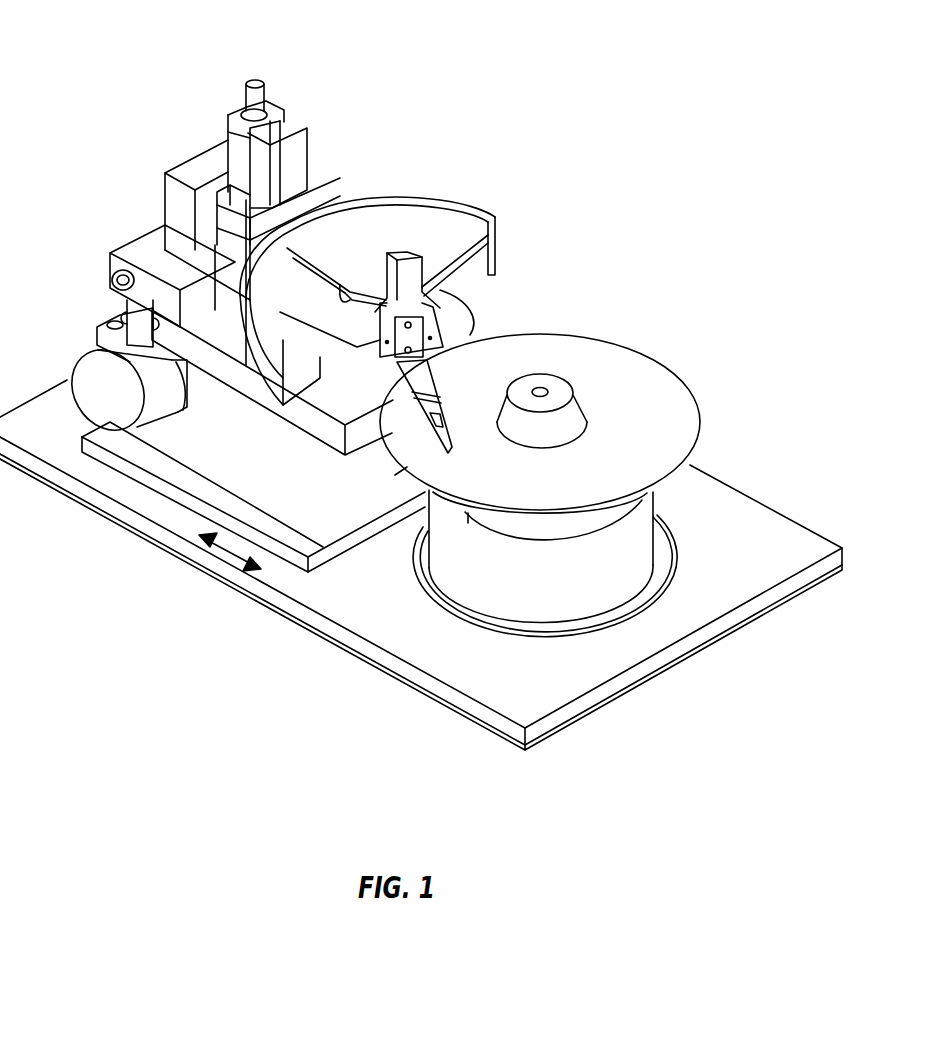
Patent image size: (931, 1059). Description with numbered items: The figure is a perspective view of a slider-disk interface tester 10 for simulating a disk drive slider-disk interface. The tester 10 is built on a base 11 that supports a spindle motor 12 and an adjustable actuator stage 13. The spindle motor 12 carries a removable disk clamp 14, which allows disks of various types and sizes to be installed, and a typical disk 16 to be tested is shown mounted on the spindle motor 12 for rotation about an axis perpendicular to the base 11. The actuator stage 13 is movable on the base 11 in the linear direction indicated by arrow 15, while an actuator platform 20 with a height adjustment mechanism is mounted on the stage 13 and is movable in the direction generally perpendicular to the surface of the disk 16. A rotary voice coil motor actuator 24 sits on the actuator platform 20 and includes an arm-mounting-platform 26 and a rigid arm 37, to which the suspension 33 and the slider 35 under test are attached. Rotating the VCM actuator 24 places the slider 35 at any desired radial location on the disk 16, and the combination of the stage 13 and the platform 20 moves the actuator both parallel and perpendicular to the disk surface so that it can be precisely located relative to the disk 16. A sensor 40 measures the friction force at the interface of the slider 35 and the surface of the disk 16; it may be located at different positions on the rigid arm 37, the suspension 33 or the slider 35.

The slider-disk interface tester 10 is at (113, 62).
The base 11 is at (768, 527).
The spindle motor 12 is at (635, 568).
The adjustable actuator stage 13 is at (97, 436).
The removable disk clamp 14 is at (563, 392).
The arrow 15 is at (227, 550).
The disk 16 is at (665, 392).
The actuator platform 20 is at (172, 230).
The rotary voice coil motor (VCM) actuator 24 is at (493, 253).
The arm-mounting-platform 26 is at (403, 278).
The suspension 33 is at (381, 475).
The slider 35 is at (447, 452).
The rigid arm 37 is at (410, 372).
The sensor 40 is at (432, 386).